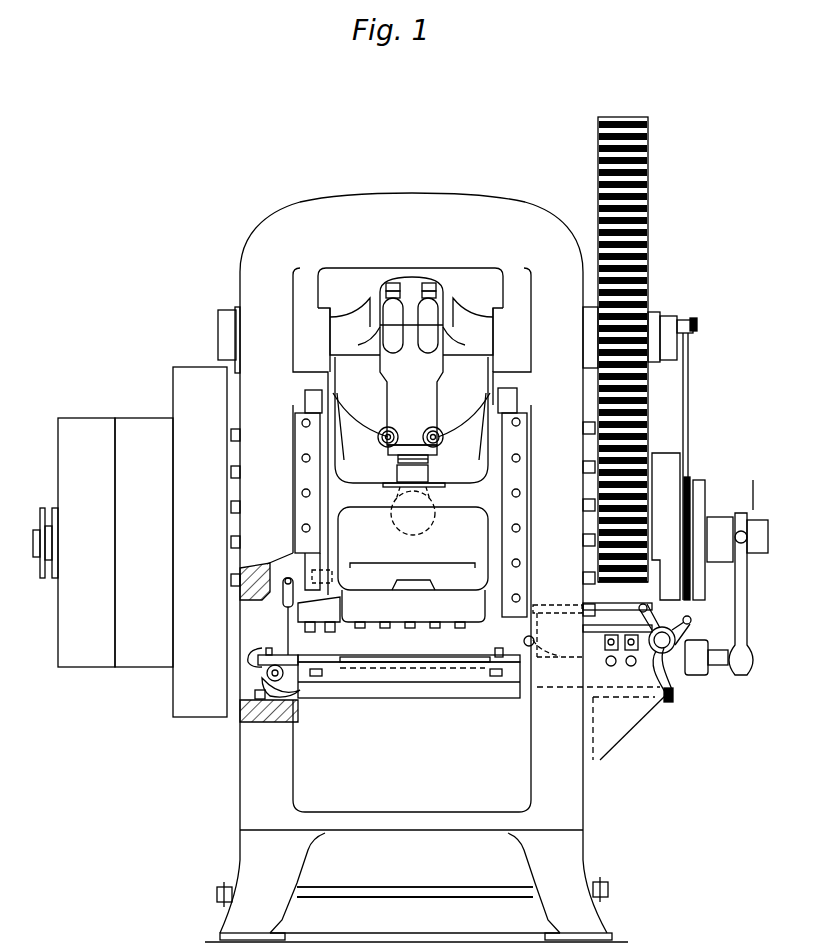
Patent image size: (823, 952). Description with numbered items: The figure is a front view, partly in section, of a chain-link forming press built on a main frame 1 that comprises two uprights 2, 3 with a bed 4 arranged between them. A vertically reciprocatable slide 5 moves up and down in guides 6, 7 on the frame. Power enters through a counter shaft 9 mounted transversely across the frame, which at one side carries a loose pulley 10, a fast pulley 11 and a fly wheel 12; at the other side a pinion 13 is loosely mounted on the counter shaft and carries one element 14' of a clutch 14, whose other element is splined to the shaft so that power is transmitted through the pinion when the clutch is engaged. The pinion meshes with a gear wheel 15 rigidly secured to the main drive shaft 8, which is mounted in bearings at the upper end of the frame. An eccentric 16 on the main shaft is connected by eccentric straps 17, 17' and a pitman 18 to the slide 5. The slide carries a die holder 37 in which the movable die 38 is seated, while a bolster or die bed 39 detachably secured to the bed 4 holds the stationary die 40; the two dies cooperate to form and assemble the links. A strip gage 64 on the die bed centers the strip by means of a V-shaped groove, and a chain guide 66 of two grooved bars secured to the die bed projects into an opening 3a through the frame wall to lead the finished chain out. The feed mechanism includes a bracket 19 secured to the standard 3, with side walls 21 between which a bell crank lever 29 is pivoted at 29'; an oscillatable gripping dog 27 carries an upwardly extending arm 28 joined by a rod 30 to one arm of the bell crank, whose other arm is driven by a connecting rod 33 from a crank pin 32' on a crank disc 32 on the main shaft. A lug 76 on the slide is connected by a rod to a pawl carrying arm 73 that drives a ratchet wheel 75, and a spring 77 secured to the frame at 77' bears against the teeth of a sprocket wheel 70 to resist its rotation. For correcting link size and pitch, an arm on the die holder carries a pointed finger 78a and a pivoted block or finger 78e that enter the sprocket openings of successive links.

The main frame 1 is at (416, 567).
The upright 2 is at (250, 755).
The upright 3 is at (580, 800).
The opening 3a is at (269, 637).
The bed 4 is at (443, 805).
The slide 5 is at (488, 536).
The guide 6 is at (308, 468).
The guide 7 is at (520, 481).
The main drive shaft 8 is at (232, 330).
The counter shaft 9 is at (36, 540).
The loose pulley 10 is at (90, 424).
The fast pulley 11 is at (141, 424).
The fly wheel 12 is at (187, 372).
The pinion 13 is at (612, 583).
The clutch 14 is at (708, 526).
The clutch element 14' is at (666, 515).
The gear wheel 15 is at (648, 211).
The eccentric 16 is at (450, 307).
The eccentric strap 17 is at (411, 345).
The eccentric strap 17' is at (411, 420).
The pitman 18 is at (430, 473).
The bracket 19 is at (628, 724).
The side wall 21 is at (670, 700).
The oscillatable gripping dog 27 is at (554, 642).
The arm 28 is at (528, 622).
The bell crank lever 29 is at (685, 648).
The pivot 29' is at (709, 611).
The rod 30 is at (548, 607).
The crank disc 32 is at (641, 329).
The crank pin 32' is at (706, 325).
The connecting rod 33 is at (689, 396).
The die holder 37 is at (413, 606).
The movable die 38 is at (450, 628).
The die bed 39 is at (485, 682).
The stationary die 40 is at (440, 657).
The strip gage 64 is at (499, 648).
The chain guide 66 is at (257, 647).
The sprocket wheel 70 is at (263, 673).
The pawl carrying arm 73 is at (409, 669).
The ratchet wheel 75 is at (278, 651).
The lug 76 is at (318, 594).
The spring 77 is at (285, 689).
The spring securing point 77' is at (254, 691).
The finger 78a is at (332, 625).
The block or finger 78e is at (310, 625).